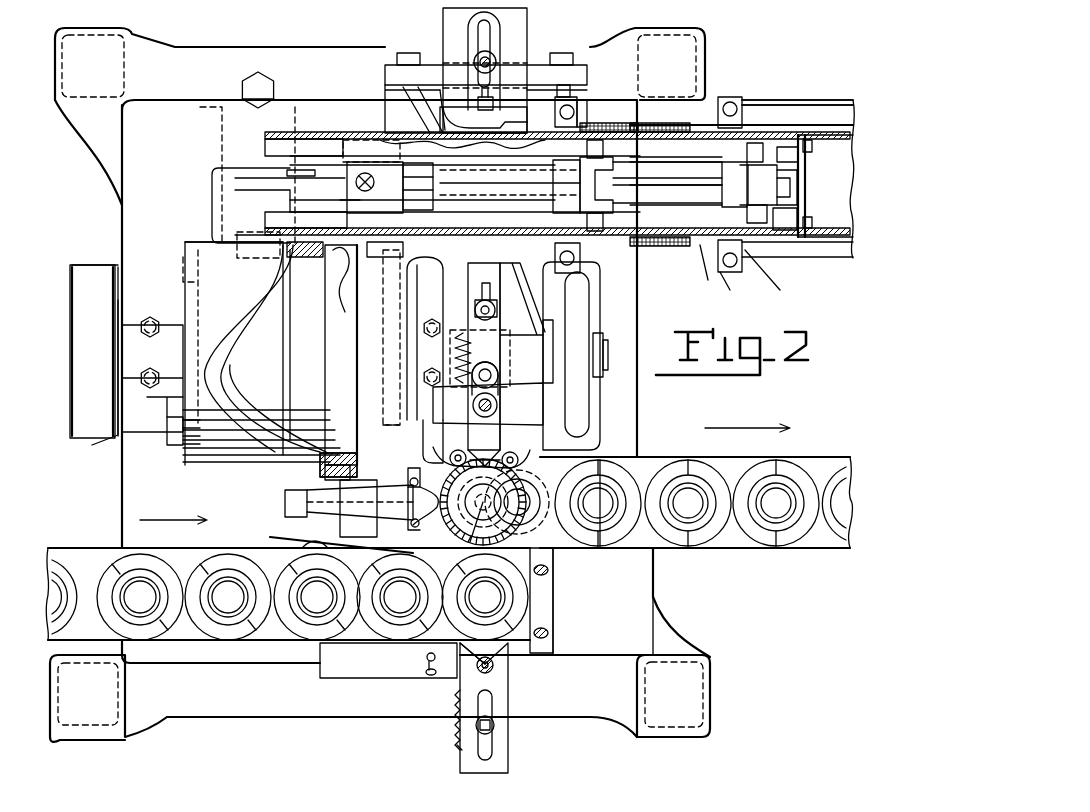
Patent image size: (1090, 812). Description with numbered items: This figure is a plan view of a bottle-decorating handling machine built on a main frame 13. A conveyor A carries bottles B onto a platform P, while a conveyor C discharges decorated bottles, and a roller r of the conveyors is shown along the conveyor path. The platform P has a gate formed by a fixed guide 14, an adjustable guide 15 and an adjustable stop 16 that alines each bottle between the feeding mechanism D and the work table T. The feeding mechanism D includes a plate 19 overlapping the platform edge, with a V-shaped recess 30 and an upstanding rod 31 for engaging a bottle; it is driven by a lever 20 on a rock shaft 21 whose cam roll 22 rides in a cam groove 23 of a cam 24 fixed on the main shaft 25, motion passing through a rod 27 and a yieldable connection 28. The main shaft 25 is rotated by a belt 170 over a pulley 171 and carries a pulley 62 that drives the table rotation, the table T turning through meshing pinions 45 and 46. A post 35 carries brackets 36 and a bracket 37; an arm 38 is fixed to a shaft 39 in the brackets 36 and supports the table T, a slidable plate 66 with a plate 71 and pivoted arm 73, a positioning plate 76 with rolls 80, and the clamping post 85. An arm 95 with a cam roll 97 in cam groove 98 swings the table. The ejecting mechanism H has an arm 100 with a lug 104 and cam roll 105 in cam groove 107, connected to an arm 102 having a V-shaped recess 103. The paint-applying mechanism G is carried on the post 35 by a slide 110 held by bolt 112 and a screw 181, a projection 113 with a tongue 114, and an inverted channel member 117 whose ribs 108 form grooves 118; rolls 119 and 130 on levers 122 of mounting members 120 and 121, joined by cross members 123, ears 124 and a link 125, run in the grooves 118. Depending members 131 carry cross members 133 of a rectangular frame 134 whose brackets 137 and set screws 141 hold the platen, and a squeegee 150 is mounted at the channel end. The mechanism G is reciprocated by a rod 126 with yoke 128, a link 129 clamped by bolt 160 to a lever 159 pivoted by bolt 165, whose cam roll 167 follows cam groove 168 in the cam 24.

The main frame 13 is at (316, 717).
The fixed guide 14 is at (265, 540).
The adjustable guide 15 is at (380, 678).
The adjustable stop 16 is at (555, 600).
The plate 19 is at (478, 718).
The lever 20 is at (170, 405).
The rock shaft 21 is at (110, 420).
The cam roll 22 is at (178, 440).
The cam groove 23 is at (183, 268).
The cam 24 is at (194, 233).
The main shaft 25 is at (609, 354).
The rod 27 is at (456, 748).
The pivotable and yieldable connection 28 is at (456, 688).
The V-shaped recess 30 is at (500, 667).
The rod 31 is at (490, 672).
The post 35 is at (390, 65).
The brackets 36 is at (575, 88).
The bracket 37 is at (497, 300).
The arm 38 is at (518, 318).
The shaft 39 is at (364, 353).
The pinion 45 is at (492, 530).
The pinion 46 is at (578, 500).
The pulley 62 is at (560, 325).
The plate 66 is at (468, 325).
The plate 71 is at (470, 430).
The arm 73 is at (543, 423).
The bottle positioning plate 76 is at (500, 370).
The roll 80 is at (520, 455).
The post 85 is at (498, 403).
The arm 95 is at (412, 300).
The cam roll 97 is at (386, 355).
The cam groove 98 is at (386, 392).
The arm 100 is at (290, 495).
The arm 102 is at (345, 518).
The V-shaped recess 103 is at (430, 530).
The lug 104 is at (334, 480).
The cam roll 105 is at (330, 460).
The cam groove 107 is at (335, 375).
The rib 108 is at (270, 155).
The slide 110 is at (450, 18).
The bolt 112 is at (500, 60).
The projection 113 is at (510, 118).
The tongue 114 is at (412, 72).
The inverted channel member 117 is at (300, 132).
The groove 118 is at (318, 140).
The roll 119 is at (626, 120).
The mounting member 120 is at (785, 172).
The mounting member 121 is at (615, 170).
The levers 122 is at (600, 190).
The cross member 123 is at (708, 205).
The ears 124 is at (788, 150).
The link 125 is at (722, 112).
The rod 126 is at (475, 180).
The yoke 128 is at (380, 160).
The link 129 is at (355, 182).
The roll 130 is at (655, 126).
The member 131 is at (552, 175).
The cross member 133 is at (738, 128).
The rectangular frame 134 is at (735, 96).
The bracket 137 is at (769, 283).
The set screws 141 is at (732, 294).
The squeegee 150 is at (610, 122).
The lever 159 is at (265, 178).
The bolt 160 is at (339, 196).
The bolt 165 is at (258, 80).
The cam roll 167 is at (290, 258).
The cam groove 168 is at (258, 325).
The belt 170 is at (90, 265).
The pulley 171 is at (80, 265).
The screw 181 is at (490, 92).
The conveyor A is at (186, 640).
The bottles B is at (232, 635).
The conveyor C is at (815, 457).
The feeding mechanism D is at (506, 749).
The paint-applying mechanism G is at (702, 274).
The bottle ejecting mechanism H is at (274, 504).
The platform P is at (636, 630).
The work table T is at (497, 521).
The roller r is at (108, 555).